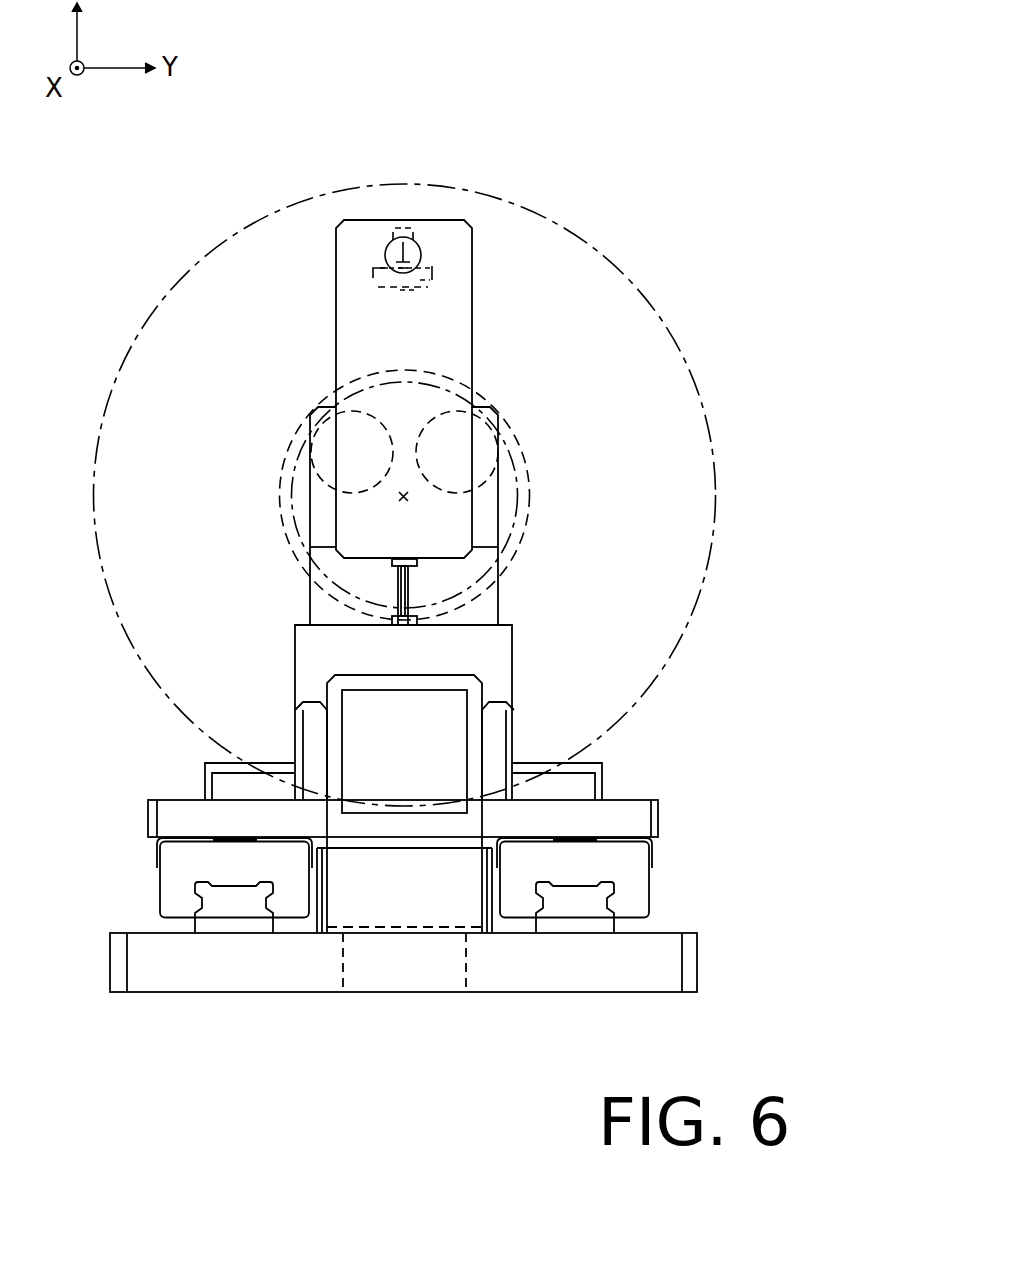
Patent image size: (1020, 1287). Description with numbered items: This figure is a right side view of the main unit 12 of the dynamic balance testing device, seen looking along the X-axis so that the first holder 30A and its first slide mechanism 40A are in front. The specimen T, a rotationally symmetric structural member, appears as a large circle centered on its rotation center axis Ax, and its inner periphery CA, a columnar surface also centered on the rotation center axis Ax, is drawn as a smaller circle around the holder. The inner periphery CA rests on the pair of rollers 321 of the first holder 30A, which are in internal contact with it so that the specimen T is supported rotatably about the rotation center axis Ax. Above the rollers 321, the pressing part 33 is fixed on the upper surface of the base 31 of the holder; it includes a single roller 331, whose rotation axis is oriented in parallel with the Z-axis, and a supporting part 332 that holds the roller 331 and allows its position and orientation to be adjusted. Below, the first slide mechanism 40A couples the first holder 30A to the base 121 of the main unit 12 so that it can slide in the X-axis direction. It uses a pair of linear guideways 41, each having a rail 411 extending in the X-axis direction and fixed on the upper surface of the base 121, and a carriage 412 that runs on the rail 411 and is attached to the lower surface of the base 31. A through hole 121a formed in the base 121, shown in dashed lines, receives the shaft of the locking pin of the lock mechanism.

The main unit 12 is at (757, 100).
The first holder 30A is at (487, 241).
The pressing part 33 is at (244, 246).
The roller 331 is at (374, 269).
The supporting part 332 is at (370, 303).
The specimen T is at (632, 278).
The rollers 321 is at (483, 489).
The inner periphery CA is at (452, 594).
The rotation center axis Ax is at (404, 500).
The first slide mechanism 40A is at (650, 778).
The base 31 is at (662, 817).
The linear guideway 41 is at (496, 881).
The carriage 412 is at (638, 880).
The rail 411 is at (640, 930).
The base 121 is at (698, 965).
The through hole 121a is at (343, 968).